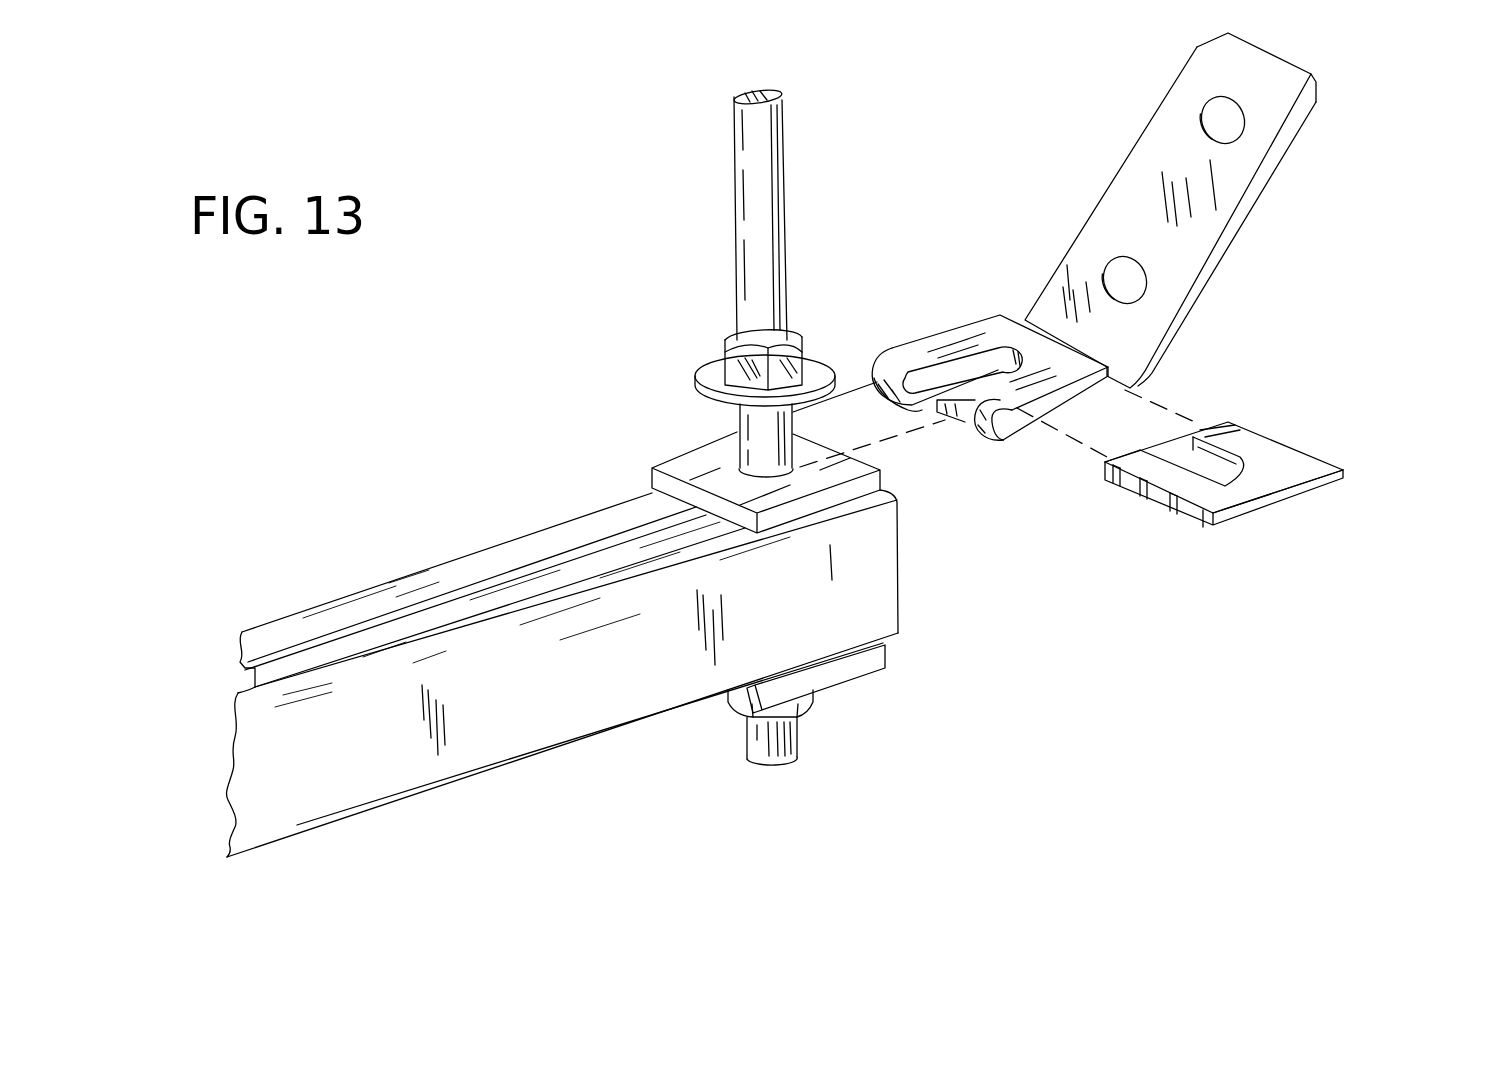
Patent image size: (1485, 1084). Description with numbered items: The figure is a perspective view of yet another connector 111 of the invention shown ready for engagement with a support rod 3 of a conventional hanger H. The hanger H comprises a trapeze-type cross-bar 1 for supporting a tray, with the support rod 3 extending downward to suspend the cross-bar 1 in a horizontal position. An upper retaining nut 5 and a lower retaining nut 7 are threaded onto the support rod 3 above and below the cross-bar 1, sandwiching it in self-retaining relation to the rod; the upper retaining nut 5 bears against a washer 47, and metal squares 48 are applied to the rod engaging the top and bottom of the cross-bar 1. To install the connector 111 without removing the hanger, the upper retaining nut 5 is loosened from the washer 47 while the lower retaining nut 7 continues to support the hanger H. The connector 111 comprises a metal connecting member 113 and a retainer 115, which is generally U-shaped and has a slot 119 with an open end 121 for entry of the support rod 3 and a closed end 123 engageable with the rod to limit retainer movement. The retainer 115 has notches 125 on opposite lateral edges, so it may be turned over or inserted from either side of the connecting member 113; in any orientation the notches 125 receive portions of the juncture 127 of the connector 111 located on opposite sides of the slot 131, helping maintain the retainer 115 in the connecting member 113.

The hanger H is at (483, 473).
The cross-bar 1 is at (494, 745).
The support rod 3 is at (757, 203).
The upper retaining nut 5 is at (802, 357).
The lower retaining nut 7 is at (812, 705).
The washer 47 is at (713, 378).
The metal square 48 is at (685, 467).
The connector 111 is at (1042, 222).
The metal connecting member 113 is at (1318, 121).
The retainer 115 is at (1275, 433).
The slot 119 is at (1307, 483).
The open end 121 is at (1182, 452).
The closed end 123 is at (1213, 497).
The notches 125 is at (1250, 434).
The juncture 127 is at (963, 430).
The slot 131 is at (985, 357).